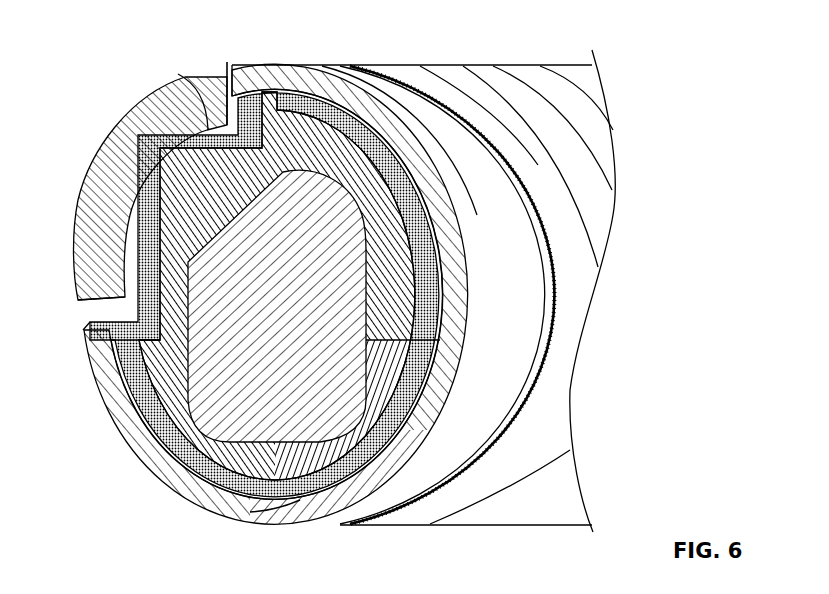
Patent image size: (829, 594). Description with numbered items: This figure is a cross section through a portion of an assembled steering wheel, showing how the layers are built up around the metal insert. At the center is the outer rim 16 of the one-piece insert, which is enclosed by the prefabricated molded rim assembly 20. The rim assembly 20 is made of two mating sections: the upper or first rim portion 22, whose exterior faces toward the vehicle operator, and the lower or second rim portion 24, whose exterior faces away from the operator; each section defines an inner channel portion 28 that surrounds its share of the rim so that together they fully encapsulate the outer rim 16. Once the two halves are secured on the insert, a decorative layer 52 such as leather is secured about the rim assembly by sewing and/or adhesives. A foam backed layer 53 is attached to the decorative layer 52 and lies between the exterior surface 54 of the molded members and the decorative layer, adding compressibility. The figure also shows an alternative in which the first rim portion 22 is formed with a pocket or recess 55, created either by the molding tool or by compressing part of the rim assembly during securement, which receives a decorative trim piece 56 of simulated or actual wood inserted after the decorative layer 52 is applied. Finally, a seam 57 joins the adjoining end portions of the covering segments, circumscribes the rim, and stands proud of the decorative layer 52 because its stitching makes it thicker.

The outer rim 16 is at (435, 318).
The rim assembly 20 is at (130, 253).
The first rim portion 22 is at (347, 297).
The second rim portion 24 is at (125, 413).
The inner channel portion 28 is at (262, 505).
The decorative layer 52 is at (291, 72).
The foam backed layer 53 is at (228, 78).
The exterior surface 54 is at (152, 477).
The pocket or recess 55 is at (176, 79).
The decorative trim piece 56 is at (99, 151).
The seam 57 is at (553, 262).